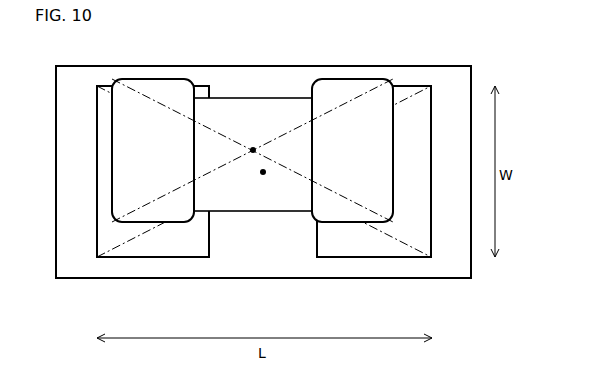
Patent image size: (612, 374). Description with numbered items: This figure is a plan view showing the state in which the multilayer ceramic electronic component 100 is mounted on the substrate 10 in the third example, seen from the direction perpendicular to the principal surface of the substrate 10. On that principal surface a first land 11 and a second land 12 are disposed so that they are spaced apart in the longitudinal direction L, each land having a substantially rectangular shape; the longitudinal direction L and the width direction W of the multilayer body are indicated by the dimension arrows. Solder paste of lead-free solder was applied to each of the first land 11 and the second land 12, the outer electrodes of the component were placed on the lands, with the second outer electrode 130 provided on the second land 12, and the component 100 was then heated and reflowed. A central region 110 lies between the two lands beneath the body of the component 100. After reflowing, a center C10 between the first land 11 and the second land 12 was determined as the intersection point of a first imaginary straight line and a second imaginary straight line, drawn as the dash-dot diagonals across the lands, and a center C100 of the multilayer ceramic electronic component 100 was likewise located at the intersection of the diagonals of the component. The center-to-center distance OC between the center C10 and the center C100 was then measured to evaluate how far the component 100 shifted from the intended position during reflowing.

The substrate 10 is at (322, 278).
The first land 11 is at (130, 242).
The second land 12 is at (397, 242).
The connecting strip 110 is at (227, 196).
The multilayer ceramic electronic component 100 is at (252, 125).
The second outer electrode 130 is at (358, 92).
The center of the multilayer ceramic electronic component C100 is at (253, 150).
The center-to-center distance OC is at (263, 170).
The center between the first land and second land C10 is at (263, 175).